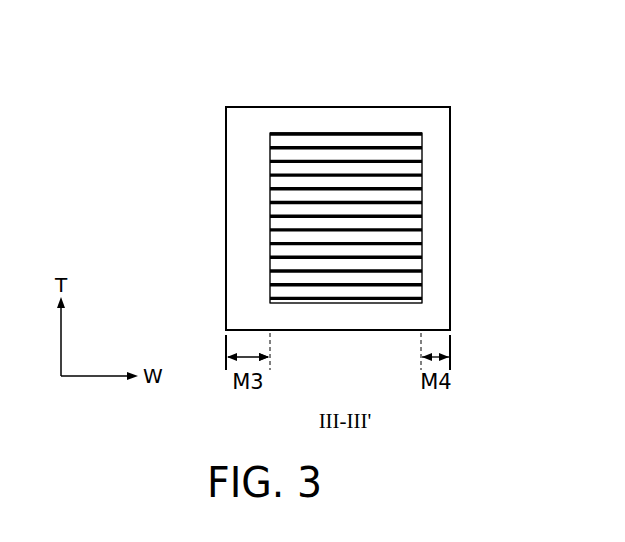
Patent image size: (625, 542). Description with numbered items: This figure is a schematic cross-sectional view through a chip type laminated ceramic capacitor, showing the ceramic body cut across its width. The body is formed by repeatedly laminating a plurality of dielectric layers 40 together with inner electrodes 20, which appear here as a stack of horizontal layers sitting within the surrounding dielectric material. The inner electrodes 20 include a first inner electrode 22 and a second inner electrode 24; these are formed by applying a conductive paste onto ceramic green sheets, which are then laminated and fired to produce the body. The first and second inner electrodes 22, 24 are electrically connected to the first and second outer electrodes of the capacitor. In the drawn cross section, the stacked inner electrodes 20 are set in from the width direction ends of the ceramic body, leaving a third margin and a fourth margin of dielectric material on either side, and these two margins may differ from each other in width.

The inner electrodes 20 is at (282, 52).
The first inner electrode 22 is at (345, 143).
The second inner electrode 24 is at (292, 137).
The dielectric layers 40 is at (403, 138).